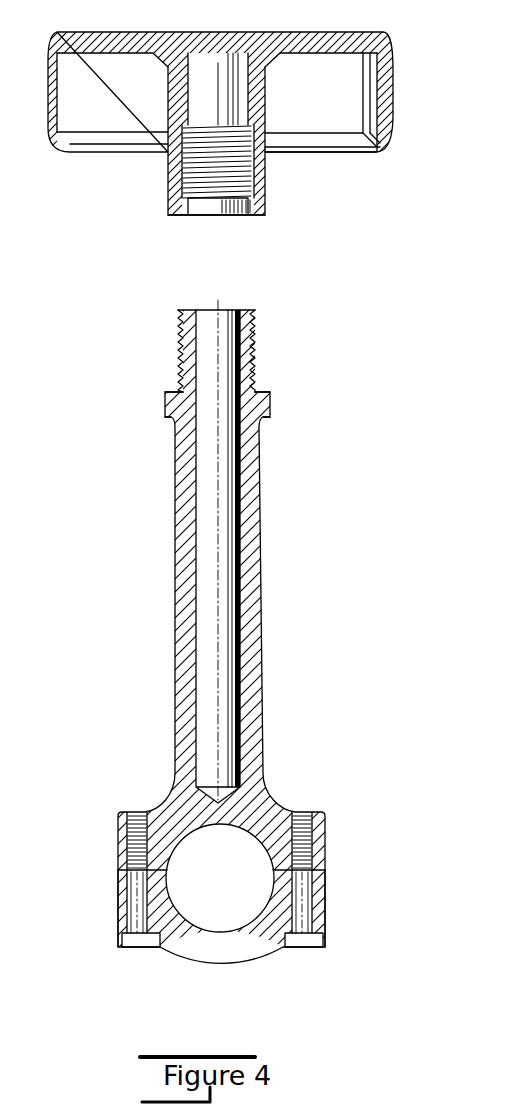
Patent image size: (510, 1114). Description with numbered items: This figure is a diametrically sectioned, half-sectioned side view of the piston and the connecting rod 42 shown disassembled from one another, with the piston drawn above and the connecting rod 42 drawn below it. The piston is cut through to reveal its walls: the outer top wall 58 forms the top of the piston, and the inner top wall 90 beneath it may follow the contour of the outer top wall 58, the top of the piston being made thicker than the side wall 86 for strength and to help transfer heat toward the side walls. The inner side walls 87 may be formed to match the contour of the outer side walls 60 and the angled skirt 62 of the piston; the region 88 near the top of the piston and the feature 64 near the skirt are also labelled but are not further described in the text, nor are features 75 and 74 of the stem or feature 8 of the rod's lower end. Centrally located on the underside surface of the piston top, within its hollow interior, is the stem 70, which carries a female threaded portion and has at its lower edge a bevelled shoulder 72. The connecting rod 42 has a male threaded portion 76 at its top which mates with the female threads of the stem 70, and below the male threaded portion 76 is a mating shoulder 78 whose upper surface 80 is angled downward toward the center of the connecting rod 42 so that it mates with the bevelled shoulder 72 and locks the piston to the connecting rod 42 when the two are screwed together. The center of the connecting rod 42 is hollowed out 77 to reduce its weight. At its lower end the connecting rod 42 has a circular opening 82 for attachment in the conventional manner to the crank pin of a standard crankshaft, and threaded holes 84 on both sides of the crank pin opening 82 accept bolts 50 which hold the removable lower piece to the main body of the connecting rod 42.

The outer top wall 58 is at (176, 32).
The handle crossbar 88 is at (302, 32).
The inner top wall 90 is at (142, 54).
The outer side walls 60 is at (392, 70).
The inner side walls 87 is at (376, 98).
The side wall 86 is at (391, 100).
The flange 64 is at (386, 132).
The angled skirt 62 is at (374, 150).
The stem 70 is at (265, 186).
The internal threads 75 is at (168, 190).
The bevelled shoulder 72 is at (173, 216).
The nut bore 74 is at (230, 217).
The hollowed out center 77 is at (218, 310).
The male threaded portion 76 is at (256, 341).
The upper surface 80 is at (268, 393).
The shoulder 78 is at (267, 410).
The connecting rod 42 is at (262, 545).
The threaded holes 84 is at (124, 828).
The bearing cap 8 is at (324, 912).
The bolts 50 is at (130, 953).
The circular opening 82 is at (238, 922).